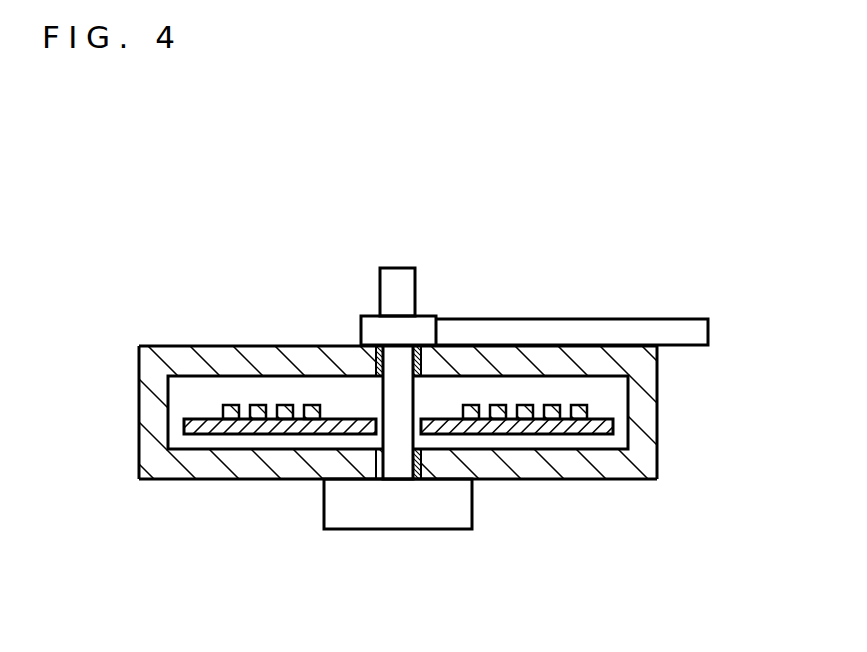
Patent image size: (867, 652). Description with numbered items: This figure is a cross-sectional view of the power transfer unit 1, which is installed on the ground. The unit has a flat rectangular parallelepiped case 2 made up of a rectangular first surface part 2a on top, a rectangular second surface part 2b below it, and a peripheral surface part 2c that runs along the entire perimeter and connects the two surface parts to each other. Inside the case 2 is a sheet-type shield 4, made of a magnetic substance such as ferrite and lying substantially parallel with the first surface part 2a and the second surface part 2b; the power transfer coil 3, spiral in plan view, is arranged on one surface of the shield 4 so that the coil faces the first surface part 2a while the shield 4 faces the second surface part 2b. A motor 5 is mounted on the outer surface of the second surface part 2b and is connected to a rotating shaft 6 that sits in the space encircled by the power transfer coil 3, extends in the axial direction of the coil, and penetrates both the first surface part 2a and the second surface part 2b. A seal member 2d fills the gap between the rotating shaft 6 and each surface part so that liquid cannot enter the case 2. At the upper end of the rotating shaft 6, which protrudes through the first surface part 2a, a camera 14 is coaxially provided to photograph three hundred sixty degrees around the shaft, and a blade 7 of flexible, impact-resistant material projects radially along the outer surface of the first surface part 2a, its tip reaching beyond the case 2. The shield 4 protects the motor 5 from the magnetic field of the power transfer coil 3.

The power transfer unit 1 is at (754, 140).
The case 2 is at (660, 458).
The first surface part 2a is at (177, 355).
The second surface part 2b is at (220, 470).
The peripheral surface part 2c is at (150, 450).
The seal member 2d is at (414, 355).
The power transfer coil 3 is at (588, 410).
The shield 4 is at (538, 432).
The motor 5 is at (353, 521).
The rotating shaft 6 is at (397, 355).
The blade 7 is at (690, 327).
The camera 14 is at (396, 277).